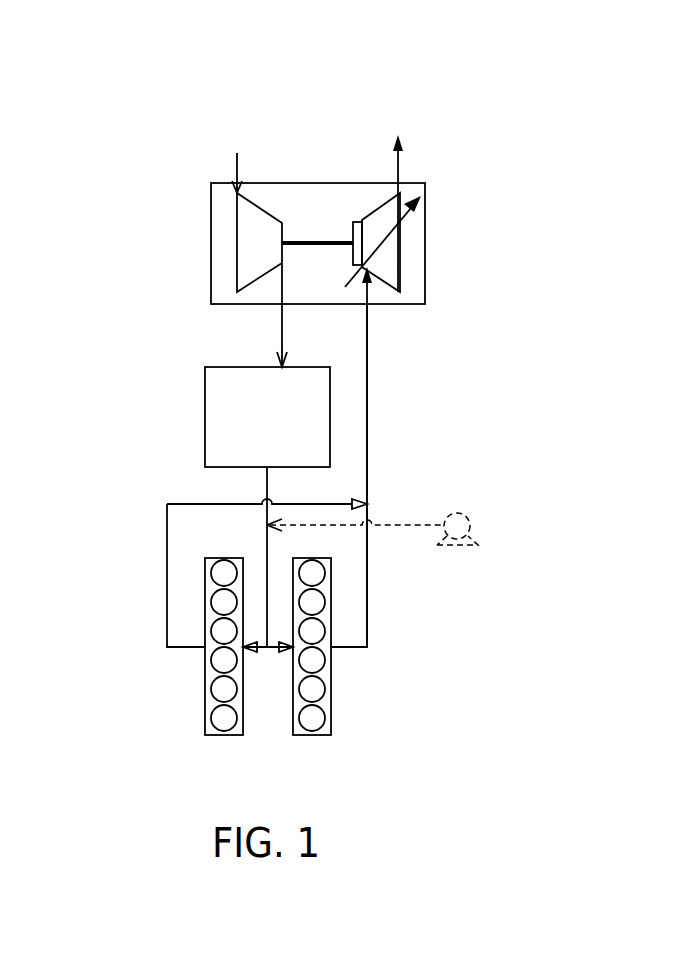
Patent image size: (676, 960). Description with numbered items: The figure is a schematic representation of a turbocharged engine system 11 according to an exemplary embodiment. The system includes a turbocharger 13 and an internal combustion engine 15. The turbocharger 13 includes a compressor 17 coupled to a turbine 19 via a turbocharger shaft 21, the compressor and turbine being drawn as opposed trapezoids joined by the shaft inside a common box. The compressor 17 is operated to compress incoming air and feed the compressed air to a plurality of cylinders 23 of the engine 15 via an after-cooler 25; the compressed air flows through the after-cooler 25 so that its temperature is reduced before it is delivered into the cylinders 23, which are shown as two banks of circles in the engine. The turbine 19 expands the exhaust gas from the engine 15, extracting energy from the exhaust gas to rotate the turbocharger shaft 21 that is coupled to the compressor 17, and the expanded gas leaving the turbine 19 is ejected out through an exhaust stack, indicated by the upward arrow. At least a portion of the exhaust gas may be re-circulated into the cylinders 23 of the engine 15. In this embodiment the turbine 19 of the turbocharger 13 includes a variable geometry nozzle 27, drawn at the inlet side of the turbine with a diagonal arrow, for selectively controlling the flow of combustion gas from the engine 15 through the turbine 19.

The engine system 11 is at (148, 40).
The turbocharger 13 is at (427, 186).
The internal combustion engine 15 is at (157, 592).
The compressor 17 is at (237, 243).
The turbine 19 is at (402, 268).
The turbocharger shaft 21 is at (304, 240).
The cylinders 23 is at (313, 688).
The after-cooler 25 is at (205, 418).
The variable geometry nozzle 27 is at (357, 252).